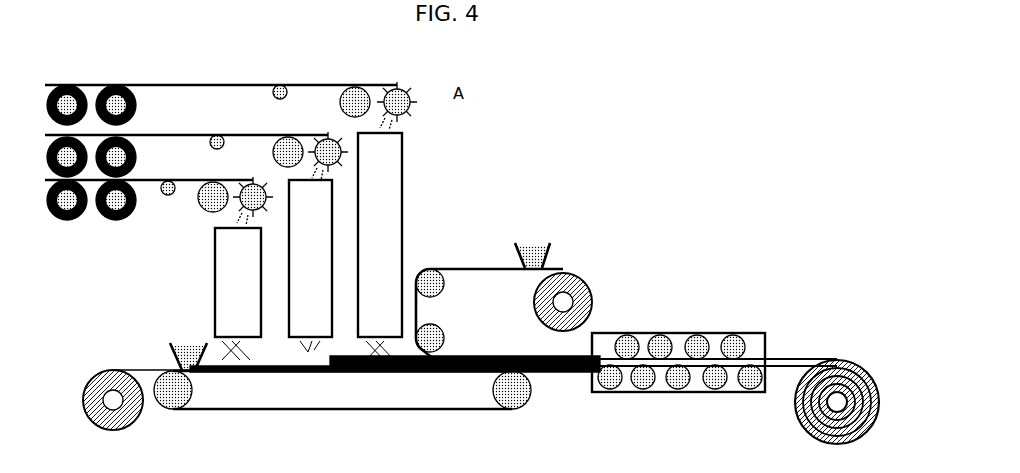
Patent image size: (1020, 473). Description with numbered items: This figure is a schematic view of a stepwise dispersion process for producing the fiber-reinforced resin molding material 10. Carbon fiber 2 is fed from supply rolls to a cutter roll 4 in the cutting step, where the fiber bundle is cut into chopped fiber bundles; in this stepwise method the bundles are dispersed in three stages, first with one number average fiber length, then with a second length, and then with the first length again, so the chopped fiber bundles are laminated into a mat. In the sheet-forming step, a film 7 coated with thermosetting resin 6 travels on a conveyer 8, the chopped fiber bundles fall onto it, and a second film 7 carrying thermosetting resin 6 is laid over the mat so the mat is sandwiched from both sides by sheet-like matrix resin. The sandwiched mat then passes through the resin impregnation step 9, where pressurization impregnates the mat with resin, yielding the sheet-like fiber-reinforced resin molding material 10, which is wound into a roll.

The carbon fiber 2 is at (143, 100).
The cutter roll 4 is at (335, 153).
The thermosetting resin 6 is at (195, 345).
The film 7 is at (109, 380).
The conveyer 8 is at (320, 401).
The resin impregnation step 9 is at (714, 379).
The fiber-reinforced resin molding material 10 is at (800, 424).